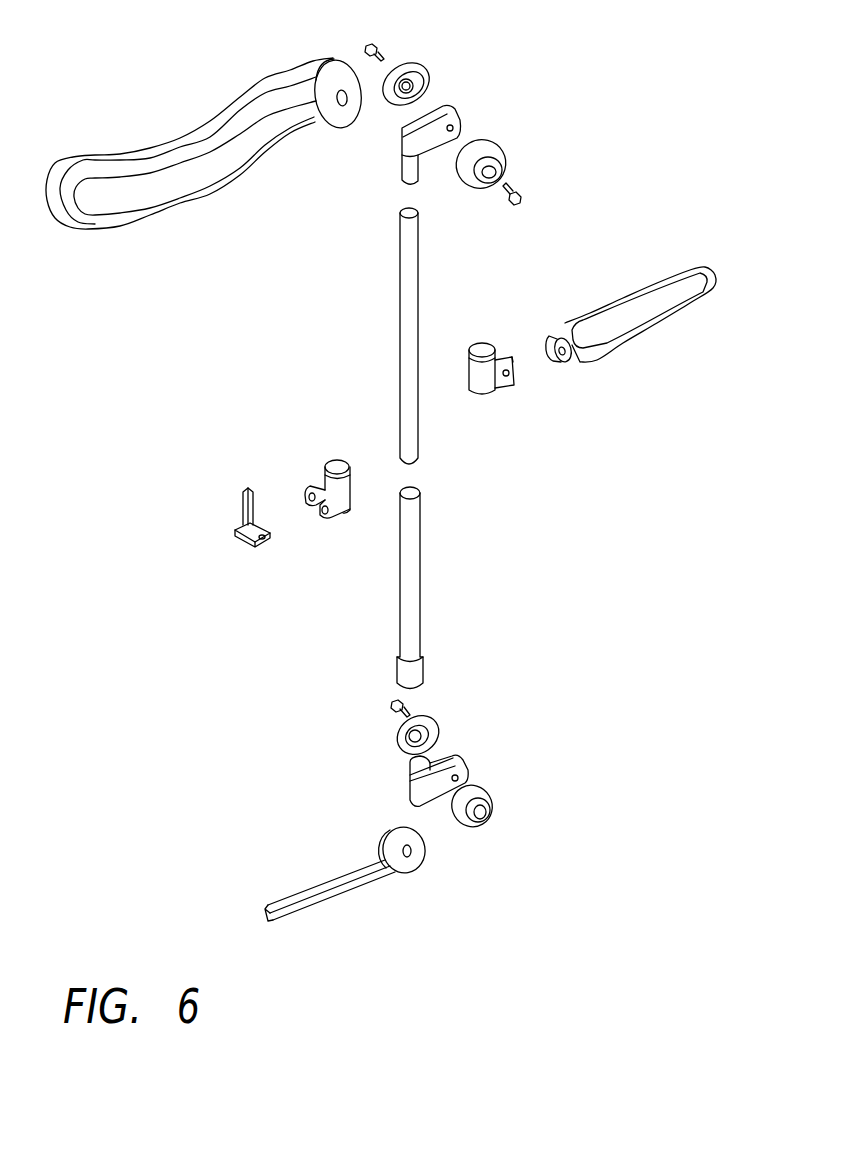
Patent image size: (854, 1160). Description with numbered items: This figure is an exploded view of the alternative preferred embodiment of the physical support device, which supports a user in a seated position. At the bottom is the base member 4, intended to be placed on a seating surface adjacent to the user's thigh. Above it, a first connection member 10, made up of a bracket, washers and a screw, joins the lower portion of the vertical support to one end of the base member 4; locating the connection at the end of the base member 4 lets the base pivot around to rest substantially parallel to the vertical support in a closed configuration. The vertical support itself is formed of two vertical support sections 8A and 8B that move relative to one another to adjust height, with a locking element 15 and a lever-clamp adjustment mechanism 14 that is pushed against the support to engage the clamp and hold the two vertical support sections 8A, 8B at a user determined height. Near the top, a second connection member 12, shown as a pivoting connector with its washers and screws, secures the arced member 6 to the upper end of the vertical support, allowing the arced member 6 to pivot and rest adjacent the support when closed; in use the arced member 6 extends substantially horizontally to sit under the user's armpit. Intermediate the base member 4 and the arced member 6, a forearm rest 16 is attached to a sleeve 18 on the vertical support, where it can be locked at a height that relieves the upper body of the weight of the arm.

The base member 4 is at (368, 885).
The arced member 6 is at (310, 60).
The vertical support section 8A is at (400, 288).
The vertical support section 8B is at (420, 622).
The first connection member 10 is at (433, 718).
The second connection member 12 is at (423, 63).
The adjustment mechanism 14 is at (325, 468).
The locking element 15 is at (237, 493).
The forearm rest 16 is at (670, 273).
The sleeve 18 is at (482, 342).